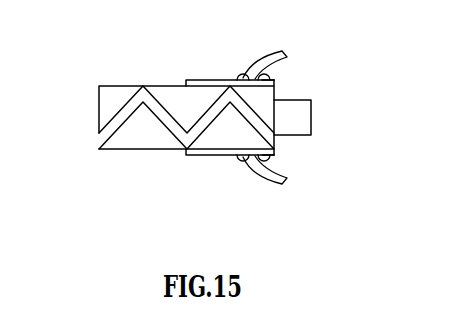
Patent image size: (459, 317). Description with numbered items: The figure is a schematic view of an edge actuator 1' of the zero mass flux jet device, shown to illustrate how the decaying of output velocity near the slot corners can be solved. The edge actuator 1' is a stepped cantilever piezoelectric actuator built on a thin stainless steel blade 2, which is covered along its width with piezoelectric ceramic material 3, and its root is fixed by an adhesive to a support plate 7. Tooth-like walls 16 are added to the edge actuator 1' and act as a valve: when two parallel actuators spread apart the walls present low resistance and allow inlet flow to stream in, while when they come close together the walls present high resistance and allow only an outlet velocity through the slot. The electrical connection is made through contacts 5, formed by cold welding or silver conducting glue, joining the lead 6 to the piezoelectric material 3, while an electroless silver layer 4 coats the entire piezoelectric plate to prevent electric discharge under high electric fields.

The edge actuator 1' is at (61, 117).
The tooth-like walls 16 is at (115, 94).
The thin stainless steel blade 2 is at (148, 87).
The piezoelectric ceramic material 3 is at (188, 80).
The electroless silver layer 4 is at (275, 73).
The contacts 5 is at (244, 78).
The lead 6 is at (273, 55).
The support plate 7 is at (302, 123).